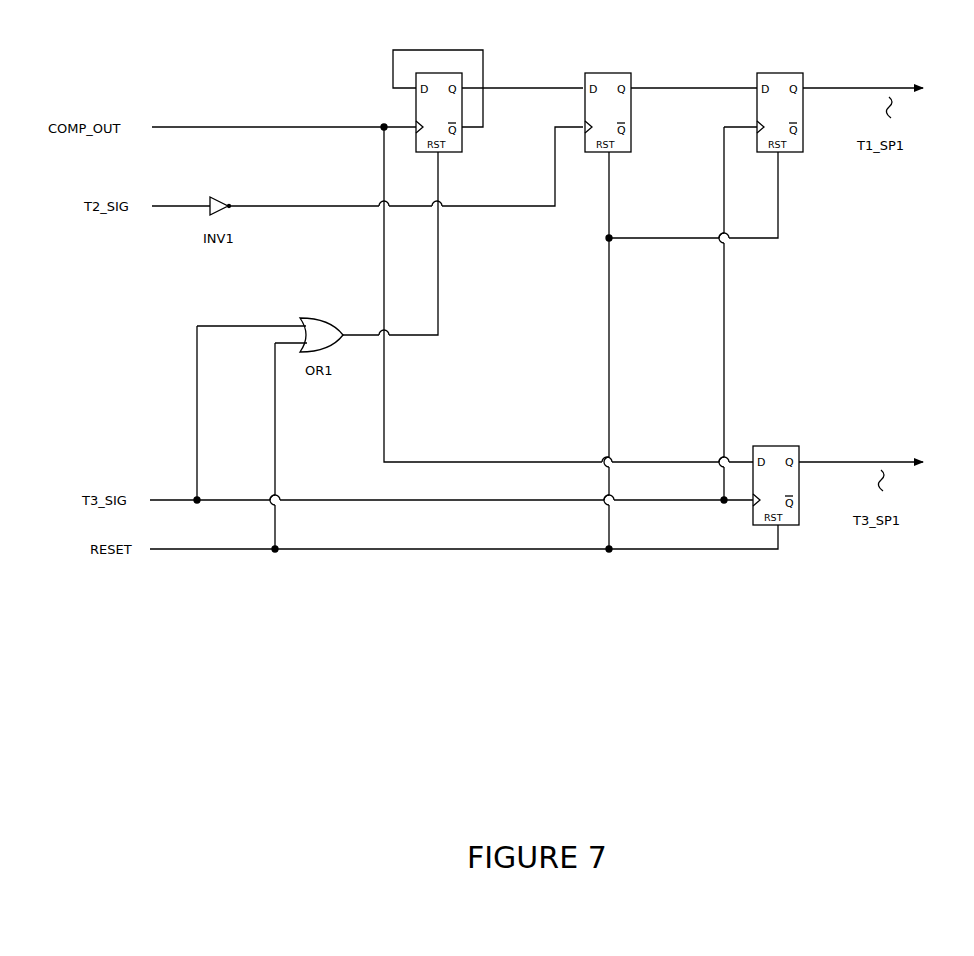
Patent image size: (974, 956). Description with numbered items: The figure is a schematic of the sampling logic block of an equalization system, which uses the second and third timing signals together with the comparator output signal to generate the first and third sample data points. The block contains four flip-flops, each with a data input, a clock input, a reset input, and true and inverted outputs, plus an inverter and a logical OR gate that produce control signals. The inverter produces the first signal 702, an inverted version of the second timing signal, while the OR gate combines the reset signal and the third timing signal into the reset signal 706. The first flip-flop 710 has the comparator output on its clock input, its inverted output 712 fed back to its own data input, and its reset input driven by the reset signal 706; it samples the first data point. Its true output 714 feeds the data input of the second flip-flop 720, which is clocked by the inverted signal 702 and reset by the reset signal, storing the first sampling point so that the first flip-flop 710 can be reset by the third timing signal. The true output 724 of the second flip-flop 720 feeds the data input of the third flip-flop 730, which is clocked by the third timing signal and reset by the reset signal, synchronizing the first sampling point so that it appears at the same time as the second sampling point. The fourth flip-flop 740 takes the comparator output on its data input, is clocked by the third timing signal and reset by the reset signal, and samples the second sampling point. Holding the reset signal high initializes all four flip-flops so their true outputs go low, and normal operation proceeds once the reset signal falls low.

The first signal T2B 702 is at (292, 213).
The reset signal RST 706 is at (441, 304).
The first flip-flop 710 is at (446, 158).
The NQ output 712 is at (490, 58).
The Q output 714 is at (508, 96).
The second flip-flop 720 is at (609, 160).
The Q output 724 is at (664, 96).
The third flip-flop 730 is at (798, 158).
The fourth flip-flop 740 is at (796, 531).